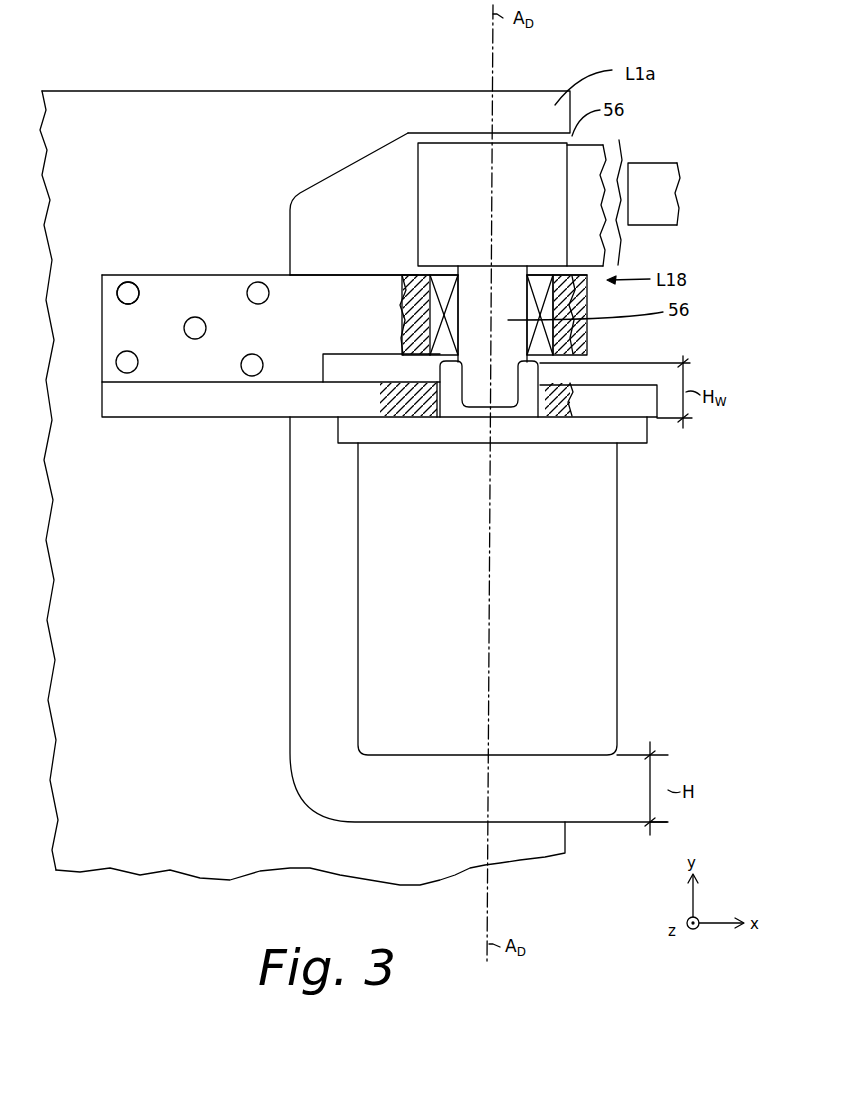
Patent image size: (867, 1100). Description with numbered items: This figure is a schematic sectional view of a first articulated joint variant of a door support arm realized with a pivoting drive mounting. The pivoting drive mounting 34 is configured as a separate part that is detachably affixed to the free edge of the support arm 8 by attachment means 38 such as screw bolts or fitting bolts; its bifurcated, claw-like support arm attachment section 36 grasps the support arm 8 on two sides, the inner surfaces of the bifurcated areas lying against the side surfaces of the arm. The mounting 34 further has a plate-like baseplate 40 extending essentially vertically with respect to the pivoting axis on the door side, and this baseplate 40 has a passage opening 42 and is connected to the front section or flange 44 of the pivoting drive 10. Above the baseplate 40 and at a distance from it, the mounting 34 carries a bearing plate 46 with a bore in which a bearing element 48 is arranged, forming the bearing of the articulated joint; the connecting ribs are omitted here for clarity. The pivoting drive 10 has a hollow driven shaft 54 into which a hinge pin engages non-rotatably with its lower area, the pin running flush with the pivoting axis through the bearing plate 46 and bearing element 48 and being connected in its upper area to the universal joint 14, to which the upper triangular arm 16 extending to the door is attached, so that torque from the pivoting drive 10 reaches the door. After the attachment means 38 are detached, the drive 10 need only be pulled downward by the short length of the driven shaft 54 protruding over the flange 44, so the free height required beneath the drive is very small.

The support arm 8 is at (153, 110).
The pivoting drive 10 is at (603, 575).
The universal joint 14 is at (418, 216).
The upper triangular arm 16 is at (645, 172).
The pivoting drive mounting 34 is at (217, 405).
The support arm attachment section 36 is at (169, 285).
The attachment means 38 is at (125, 292).
The baseplate 40 is at (627, 410).
The passage opening 42 is at (437, 380).
The flange 44 is at (627, 438).
The bearing plate 46 is at (583, 330).
The bearing element 48 is at (545, 294).
The hollow driven shaft 54 is at (535, 370).